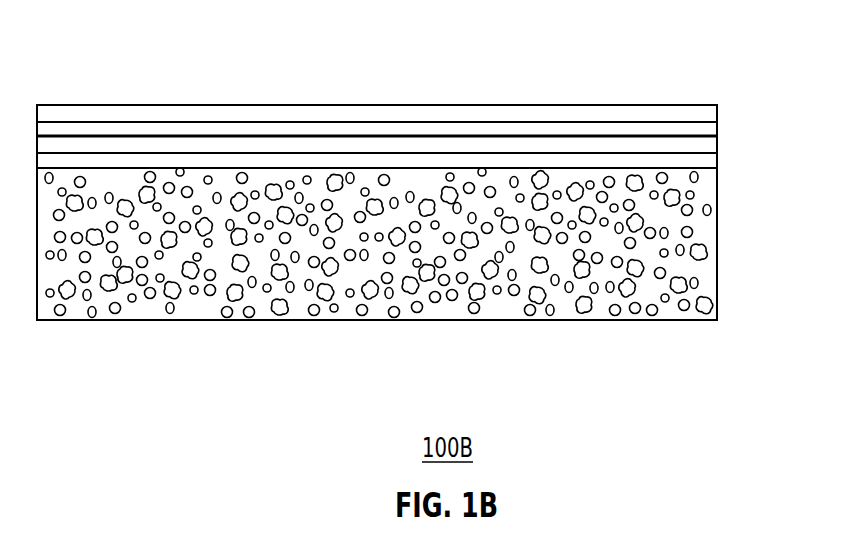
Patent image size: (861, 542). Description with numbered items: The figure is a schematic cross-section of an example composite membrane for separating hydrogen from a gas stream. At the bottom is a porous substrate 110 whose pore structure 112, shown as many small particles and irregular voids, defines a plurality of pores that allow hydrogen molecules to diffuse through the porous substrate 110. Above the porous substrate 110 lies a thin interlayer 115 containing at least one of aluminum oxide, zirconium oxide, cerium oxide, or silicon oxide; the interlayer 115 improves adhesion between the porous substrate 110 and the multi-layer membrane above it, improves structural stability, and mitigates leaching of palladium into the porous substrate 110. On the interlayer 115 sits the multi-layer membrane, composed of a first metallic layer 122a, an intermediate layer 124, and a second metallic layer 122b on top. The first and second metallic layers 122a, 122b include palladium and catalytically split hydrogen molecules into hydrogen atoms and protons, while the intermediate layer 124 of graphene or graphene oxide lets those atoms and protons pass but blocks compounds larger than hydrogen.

The porous substrate 110 is at (717, 298).
The pore structure 112 is at (191, 311).
The interlayer 115 is at (705, 170).
The first metallic layer 122a is at (717, 145).
The second metallic layer 122b is at (550, 105).
The intermediate layer 124 is at (717, 128).